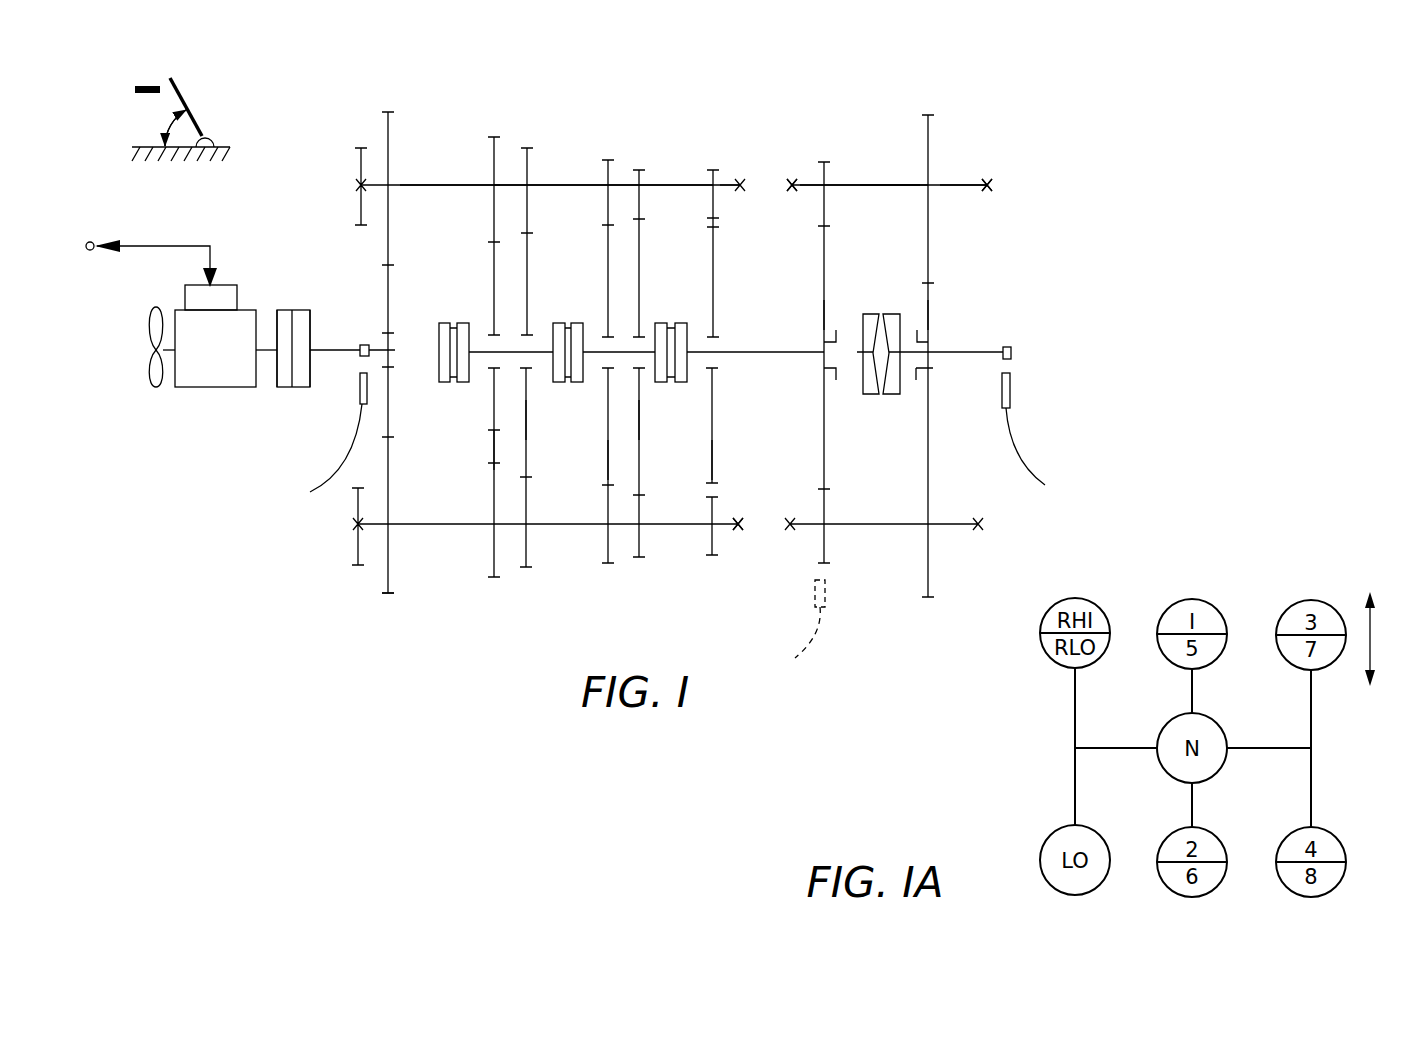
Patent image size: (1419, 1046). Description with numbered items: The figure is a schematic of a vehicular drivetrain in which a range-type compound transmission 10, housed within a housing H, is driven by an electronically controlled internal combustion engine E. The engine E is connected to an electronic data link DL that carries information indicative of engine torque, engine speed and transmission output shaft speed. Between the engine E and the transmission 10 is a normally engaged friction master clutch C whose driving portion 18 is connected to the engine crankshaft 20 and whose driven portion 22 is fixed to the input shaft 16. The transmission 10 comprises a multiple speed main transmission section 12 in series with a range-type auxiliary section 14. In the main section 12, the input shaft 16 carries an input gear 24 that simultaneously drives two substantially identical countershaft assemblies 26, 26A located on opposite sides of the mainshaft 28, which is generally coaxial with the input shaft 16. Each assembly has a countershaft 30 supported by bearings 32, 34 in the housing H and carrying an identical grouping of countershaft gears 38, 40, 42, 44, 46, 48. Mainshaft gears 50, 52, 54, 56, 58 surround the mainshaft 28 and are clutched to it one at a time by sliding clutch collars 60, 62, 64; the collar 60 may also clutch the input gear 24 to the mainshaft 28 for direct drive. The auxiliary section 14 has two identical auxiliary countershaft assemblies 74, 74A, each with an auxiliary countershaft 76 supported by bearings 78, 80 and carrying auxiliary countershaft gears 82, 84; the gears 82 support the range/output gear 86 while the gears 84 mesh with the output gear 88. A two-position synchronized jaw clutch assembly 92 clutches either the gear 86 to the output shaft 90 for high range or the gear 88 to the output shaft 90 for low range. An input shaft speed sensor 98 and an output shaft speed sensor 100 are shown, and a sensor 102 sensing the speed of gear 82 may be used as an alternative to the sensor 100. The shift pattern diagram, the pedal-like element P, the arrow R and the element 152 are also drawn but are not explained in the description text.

In FIG. 1, the compound transmission 10 is at (760, 176).
In FIG. 1, the main transmission section 12 is at (560, 170).
In FIG. 1, the auxiliary transmission range section 14 is at (854, 158).
In FIG. 1, the input shaft 16 is at (333, 350).
In FIG. 1, the input or driving portion 18 is at (282, 381).
In FIG. 1, the engine crankshaft 20 is at (268, 347).
In FIG. 1, the driven portion 22 is at (303, 385).
In FIG. 1, the input gear 24 is at (390, 300).
In FIG. 1, the countershaft assembly 26 is at (415, 175).
In FIG. 1, the countershaft assembly 26A is at (455, 531).
In FIG. 1, the mainshaft 28 is at (790, 355).
In FIG. 1, the countershaft 30 is at (458, 187).
In FIG. 1, the bearing 32 is at (352, 518).
In FIG. 1, the bearing 34 is at (745, 530).
In FIG. 1, the countershaft gear 38 is at (393, 580).
In FIG. 1, the countershaft gear 40 is at (490, 558).
In FIG. 1, the countershaft gear 42 is at (530, 555).
In FIG. 1, the countershaft gear 44 is at (602, 548).
In FIG. 1, the countershaft gear 46 is at (645, 545).
In FIG. 1, the countershaft gear 48 is at (705, 543).
In FIG. 1, the mainshaft gear 50 is at (494, 437).
In FIG. 1, the mainshaft gear 52 is at (526, 425).
In FIG. 1, the mainshaft gear 54 is at (608, 460).
In FIG. 1, the mainshaft gear 56 is at (640, 425).
In FIG. 1, the mainshaft gear 58 is at (712, 460).
In FIG. 1, the sliding clutch collar 60 is at (440, 380).
In FIG. 1, the sliding clutch collar 62 is at (584, 323).
In FIG. 1, the sliding clutch collar 64 is at (657, 323).
In FIG. 1, the auxiliary countershaft assembly 74 is at (865, 180).
In FIG. 1, the auxiliary countershaft assembly 74A is at (893, 534).
In FIG. 1, the auxiliary countershaft 76 is at (900, 190).
In FIG. 1, the bearing 78 is at (791, 195).
In FIG. 1, the bearing 80 is at (990, 185).
In FIG. 1, the auxiliary section countershaft gear 82 is at (830, 176).
In FIG. 1, the auxiliary section countershaft gear 84 is at (929, 147).
In FIG. 1, the range/output gear 86 is at (823, 286).
In FIG. 1, the output gear 88 is at (928, 292).
In FIG. 1, the output shaft 90 is at (966, 346).
In FIG. 1, the synchronized jaw clutch assembly 92 is at (874, 402).
In FIG. 1, the input shaft speed sensor 98 is at (358, 385).
In FIG. 1, the output shaft speed sensor 100 is at (1012, 400).
In FIG. 1, the sensor 102 is at (813, 588).
In FIG. 1, the shift lever position sensor 152 is at (148, 84).
In FIG. 1, the pedal P is at (201, 105).
In FIG. 1, the housing H is at (358, 158).
In FIG. 1, the electronic data link DL is at (168, 246).
In FIG. 1, the engine E is at (202, 336).
In FIG. 1, the master clutch C is at (300, 302).
In FIG. 1A, the rail direction R is at (1376, 637).